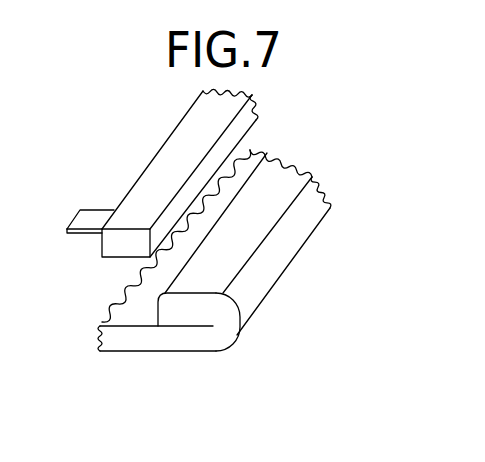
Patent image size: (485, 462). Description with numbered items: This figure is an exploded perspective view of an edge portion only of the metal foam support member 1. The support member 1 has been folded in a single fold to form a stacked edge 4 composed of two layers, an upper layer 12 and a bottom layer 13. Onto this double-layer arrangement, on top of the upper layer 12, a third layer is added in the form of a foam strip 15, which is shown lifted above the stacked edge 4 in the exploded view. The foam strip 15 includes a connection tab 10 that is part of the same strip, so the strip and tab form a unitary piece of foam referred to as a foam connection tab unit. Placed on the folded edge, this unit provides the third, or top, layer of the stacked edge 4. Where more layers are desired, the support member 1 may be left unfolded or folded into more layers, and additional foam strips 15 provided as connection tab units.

The metal foam support member 1 is at (106, 292).
The stacked edge 4 is at (237, 337).
The connection tab 10 is at (69, 232).
The upper layer 12 is at (197, 296).
The bottom layer 13 is at (142, 343).
The foam strip 15 is at (142, 137).